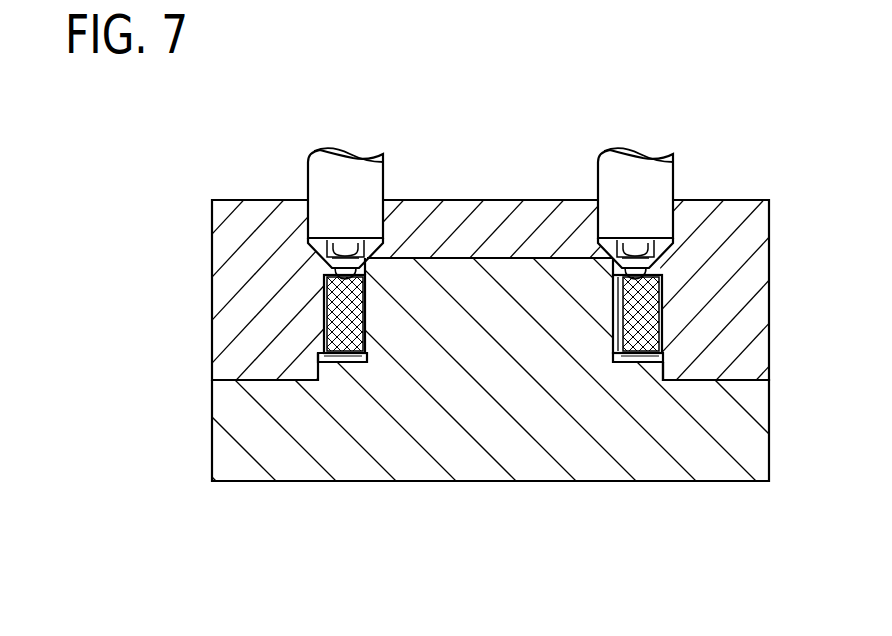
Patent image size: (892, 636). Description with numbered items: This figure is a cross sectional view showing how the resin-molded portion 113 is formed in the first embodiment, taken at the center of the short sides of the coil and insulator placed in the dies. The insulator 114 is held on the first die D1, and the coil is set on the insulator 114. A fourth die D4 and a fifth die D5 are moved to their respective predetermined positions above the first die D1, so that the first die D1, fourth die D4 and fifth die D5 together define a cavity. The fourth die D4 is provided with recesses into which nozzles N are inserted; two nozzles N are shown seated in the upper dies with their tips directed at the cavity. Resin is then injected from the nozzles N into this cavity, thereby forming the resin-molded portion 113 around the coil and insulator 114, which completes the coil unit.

The nozzle N is at (332, 167).
The first die D1 is at (531, 466).
The fourth die D4 is at (218, 246).
The fifth die D5 is at (734, 210).
The resin-molded portion 113 is at (328, 329).
The insulator 114 is at (347, 360).